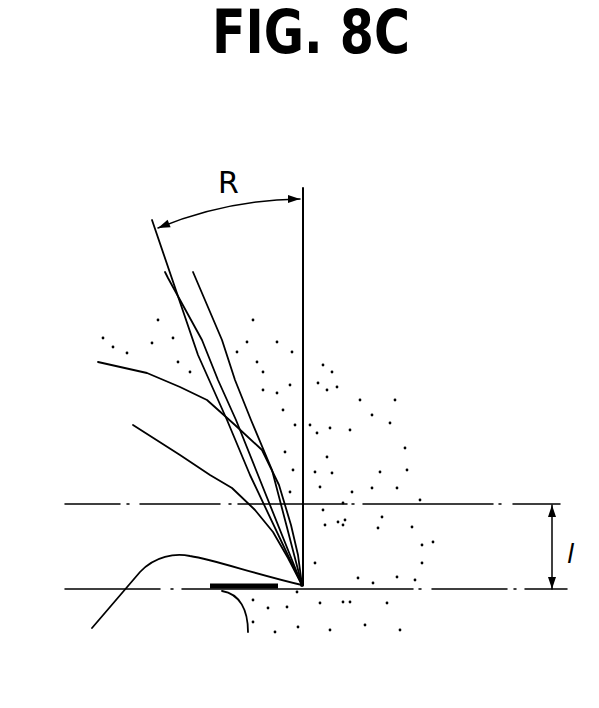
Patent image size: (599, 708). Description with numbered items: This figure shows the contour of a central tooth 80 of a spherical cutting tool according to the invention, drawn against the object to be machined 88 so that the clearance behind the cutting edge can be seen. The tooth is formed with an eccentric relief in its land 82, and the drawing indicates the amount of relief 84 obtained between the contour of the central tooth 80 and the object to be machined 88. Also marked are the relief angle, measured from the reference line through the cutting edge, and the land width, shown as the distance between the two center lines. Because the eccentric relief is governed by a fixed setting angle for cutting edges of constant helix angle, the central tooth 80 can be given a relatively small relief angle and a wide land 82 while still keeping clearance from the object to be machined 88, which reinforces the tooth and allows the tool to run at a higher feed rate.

The central tooth 80 is at (143, 482).
The land 82 is at (282, 540).
The amount of relief 84 is at (103, 316).
The object to be machined 88 is at (385, 465).